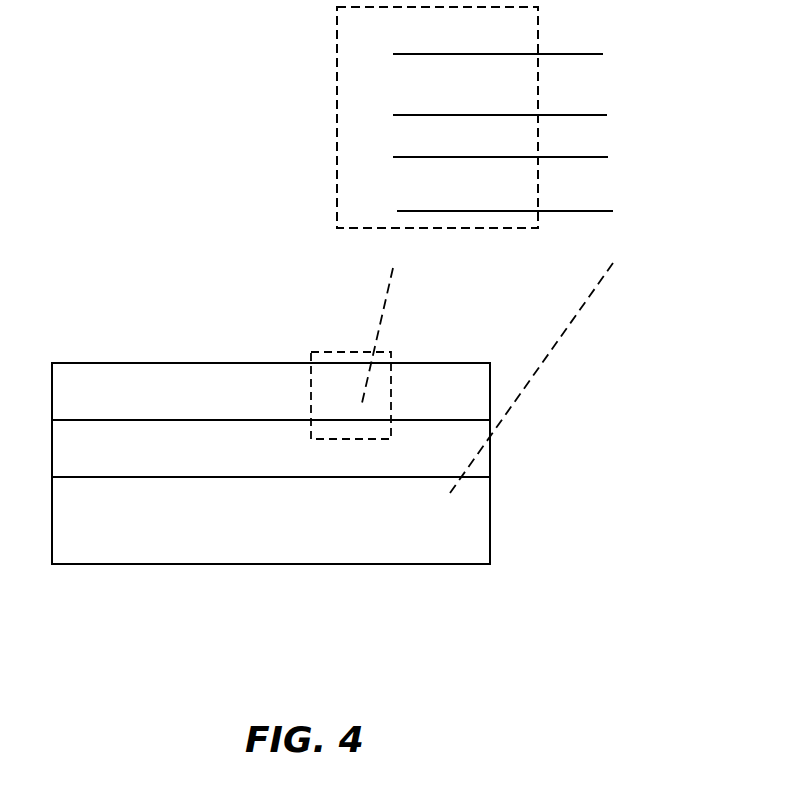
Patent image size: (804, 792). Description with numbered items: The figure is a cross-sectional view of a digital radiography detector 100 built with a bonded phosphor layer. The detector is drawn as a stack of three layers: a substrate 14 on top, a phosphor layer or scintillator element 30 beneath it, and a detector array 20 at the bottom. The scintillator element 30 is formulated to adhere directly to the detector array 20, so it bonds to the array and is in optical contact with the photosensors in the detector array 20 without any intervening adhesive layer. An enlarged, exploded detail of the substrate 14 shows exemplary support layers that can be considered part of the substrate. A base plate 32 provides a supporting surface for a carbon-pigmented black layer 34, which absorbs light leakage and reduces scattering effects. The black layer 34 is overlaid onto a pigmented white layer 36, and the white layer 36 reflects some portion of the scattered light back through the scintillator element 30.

The digital radiography detector 100 is at (347, 627).
The substrate 14 is at (468, 383).
The phosphor layer or scintillator element 30 is at (490, 448).
The detector array 20 is at (490, 520).
The base plate 32 is at (389, 74).
The black layer 34 is at (389, 115).
The white layer 36 is at (389, 157).